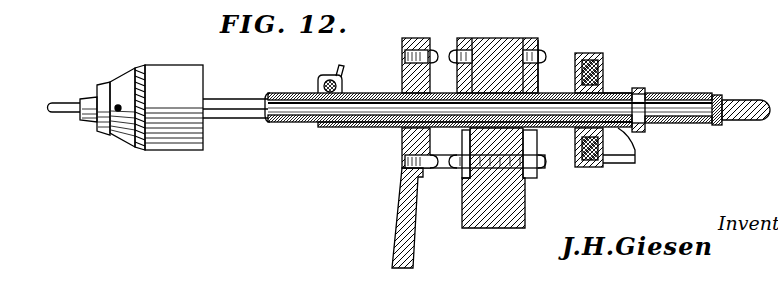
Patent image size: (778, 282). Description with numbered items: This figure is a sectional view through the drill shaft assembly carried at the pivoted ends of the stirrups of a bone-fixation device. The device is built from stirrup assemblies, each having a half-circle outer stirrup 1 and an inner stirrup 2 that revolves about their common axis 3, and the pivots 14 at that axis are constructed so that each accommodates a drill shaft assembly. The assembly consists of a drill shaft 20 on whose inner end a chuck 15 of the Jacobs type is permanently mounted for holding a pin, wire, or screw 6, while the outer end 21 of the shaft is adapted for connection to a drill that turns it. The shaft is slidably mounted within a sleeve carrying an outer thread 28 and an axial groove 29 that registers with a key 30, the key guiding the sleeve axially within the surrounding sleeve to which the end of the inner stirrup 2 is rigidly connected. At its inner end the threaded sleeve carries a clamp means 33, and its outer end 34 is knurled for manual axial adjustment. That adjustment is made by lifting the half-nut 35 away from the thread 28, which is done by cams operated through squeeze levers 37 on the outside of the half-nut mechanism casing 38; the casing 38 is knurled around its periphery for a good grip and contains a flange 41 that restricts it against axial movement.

The outer stirrup 1 is at (523, 210).
The inner stirrup 2 is at (400, 222).
The common axis 3 is at (297, 112).
The pin 6 is at (60, 105).
The pivots 14 is at (497, 62).
The chuck 15 is at (160, 145).
The drill shaft 20 is at (683, 96).
The outer end 21 is at (742, 98).
The outer thread 28 is at (617, 92).
The axial groove 29 is at (400, 128).
The key 30 is at (474, 119).
The clamp means 33 is at (319, 82).
The outer end 34 is at (642, 88).
The half-nut 35 is at (604, 78).
The squeeze levers 37 is at (625, 156).
The half-nut mechanism casing 38 is at (590, 55).
The flange 41 is at (537, 82).